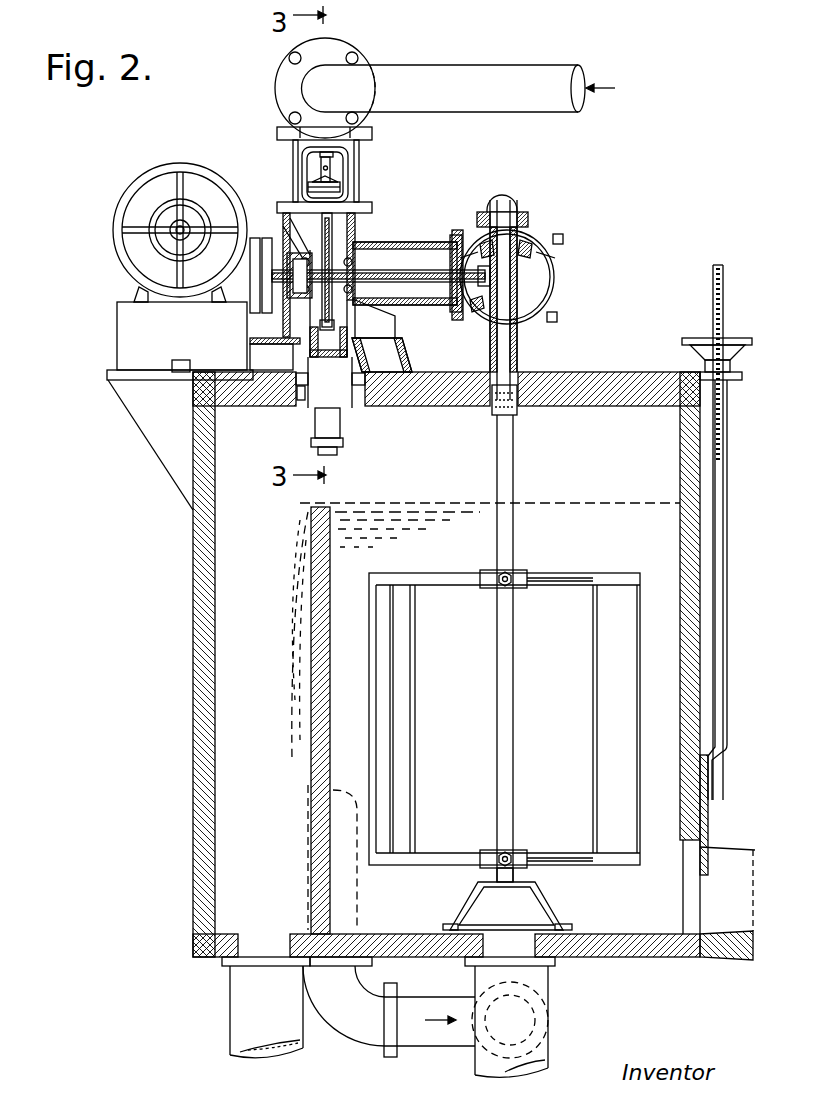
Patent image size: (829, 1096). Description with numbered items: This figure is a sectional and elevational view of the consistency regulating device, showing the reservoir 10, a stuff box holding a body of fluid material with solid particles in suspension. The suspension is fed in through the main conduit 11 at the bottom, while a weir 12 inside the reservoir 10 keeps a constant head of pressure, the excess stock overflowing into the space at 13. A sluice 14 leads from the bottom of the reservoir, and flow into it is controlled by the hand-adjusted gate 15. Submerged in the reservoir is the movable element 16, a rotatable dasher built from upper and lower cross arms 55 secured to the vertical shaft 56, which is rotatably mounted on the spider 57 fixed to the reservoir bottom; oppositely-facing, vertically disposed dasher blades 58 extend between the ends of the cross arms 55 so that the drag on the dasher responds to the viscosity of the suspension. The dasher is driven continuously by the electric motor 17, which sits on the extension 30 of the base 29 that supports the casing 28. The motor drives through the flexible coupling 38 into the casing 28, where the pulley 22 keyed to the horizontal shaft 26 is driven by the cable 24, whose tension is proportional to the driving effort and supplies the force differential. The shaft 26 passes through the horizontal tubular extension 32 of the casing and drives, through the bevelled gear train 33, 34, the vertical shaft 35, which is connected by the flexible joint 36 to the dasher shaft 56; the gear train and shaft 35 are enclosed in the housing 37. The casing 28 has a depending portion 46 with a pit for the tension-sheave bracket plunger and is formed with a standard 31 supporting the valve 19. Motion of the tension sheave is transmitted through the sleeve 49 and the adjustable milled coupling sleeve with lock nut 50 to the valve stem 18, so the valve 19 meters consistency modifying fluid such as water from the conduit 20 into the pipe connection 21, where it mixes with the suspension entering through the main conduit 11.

The reservoir 10 is at (195, 693).
The main conduit 11 is at (548, 990).
The weir 12 is at (311, 748).
The overflow space 13 is at (212, 808).
The sluice 14 is at (740, 957).
The hand-adjusted gate 15 is at (708, 835).
The movable element 16 is at (506, 572).
The electric motor 17 is at (125, 198).
The valve stem 18 is at (332, 165).
The valve 19 is at (352, 60).
The conduit 20 is at (468, 64).
The pipe connection 21 is at (448, 1046).
The pulley 22 is at (332, 232).
The cable 24 is at (312, 340).
The horizontal shaft 26 is at (390, 270).
The casing 28 is at (358, 334).
The base 29 is at (378, 356).
The base extension 30 is at (108, 333).
The standard 31 is at (275, 325).
The horizontal tubular extension 32 is at (432, 245).
The bevelled gear 33 is at (462, 320).
The bevelled gear 34 is at (530, 240).
The vertical shaft 35 is at (517, 302).
The flexible joint 36 is at (516, 408).
The housing 37 is at (553, 304).
The flexible coupling 38 is at (266, 238).
The depending portion 46 is at (342, 430).
The sleeve 49 is at (340, 193).
The milled coupling sleeve 50 is at (310, 182).
The cross arms 55 is at (447, 575).
The vertical shaft 56 is at (514, 705).
The spider 57 is at (548, 913).
The dasher blades 58 is at (412, 745).